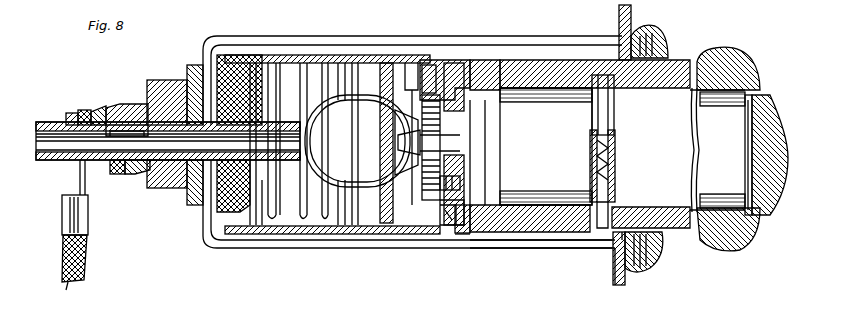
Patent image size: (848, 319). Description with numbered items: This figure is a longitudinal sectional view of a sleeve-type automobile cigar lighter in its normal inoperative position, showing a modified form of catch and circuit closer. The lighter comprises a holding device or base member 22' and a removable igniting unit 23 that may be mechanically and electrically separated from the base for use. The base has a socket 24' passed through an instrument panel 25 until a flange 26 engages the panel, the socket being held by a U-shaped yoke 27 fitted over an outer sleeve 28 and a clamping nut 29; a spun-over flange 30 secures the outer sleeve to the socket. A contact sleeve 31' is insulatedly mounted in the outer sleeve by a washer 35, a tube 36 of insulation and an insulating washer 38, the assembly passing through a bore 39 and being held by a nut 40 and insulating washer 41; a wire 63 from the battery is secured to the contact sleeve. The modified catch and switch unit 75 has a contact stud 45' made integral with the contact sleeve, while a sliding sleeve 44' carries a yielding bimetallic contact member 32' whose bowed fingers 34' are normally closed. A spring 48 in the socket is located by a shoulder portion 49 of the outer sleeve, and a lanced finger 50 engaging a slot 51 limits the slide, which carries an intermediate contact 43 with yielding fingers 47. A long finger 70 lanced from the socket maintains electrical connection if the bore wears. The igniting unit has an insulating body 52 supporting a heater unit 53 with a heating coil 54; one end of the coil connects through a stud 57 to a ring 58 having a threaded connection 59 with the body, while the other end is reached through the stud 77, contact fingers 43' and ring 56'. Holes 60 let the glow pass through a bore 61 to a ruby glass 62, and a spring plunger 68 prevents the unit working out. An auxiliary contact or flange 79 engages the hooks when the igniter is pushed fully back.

The base member 22' is at (670, 37).
The removable igniting unit 23 is at (761, 57).
The socket 24' is at (452, 238).
The instrument panel 25 is at (620, 22).
The flange 26 is at (648, 258).
The U-shaped yoke 27 is at (508, 246).
The outer sleeve 28 is at (133, 105).
The clamping nut 29 is at (163, 80).
The spun-over flange 30 is at (197, 70).
The contact sleeve 31' is at (111, 104).
The yielding bimetallic contact member 32' is at (351, 118).
The bowed fingers 34' is at (323, 141).
The washer 35 is at (265, 225).
The tube of insulation 36 is at (126, 167).
The insulating washer 38 is at (222, 212).
The bore 39 is at (139, 168).
The nut 40 is at (90, 113).
The insulating washer 41 is at (108, 114).
The intermediate contact 43 is at (419, 183).
The contact fingers 43' is at (408, 51).
The sliding sleeve 44' is at (388, 190).
The contact stud 45' is at (276, 115).
The yielding fingers 47 is at (423, 225).
The spring 48 is at (274, 225).
The shoulder portion 49 is at (250, 225).
The lanced finger 50 is at (340, 228).
The slot 51 is at (386, 222).
The body 52 is at (538, 62).
The heater unit 53 is at (455, 232).
The heating coil 54 is at (464, 85).
The ring 56' is at (432, 52).
The stud 57 is at (429, 142).
The ring 58 is at (456, 222).
The threaded connection 59 is at (490, 80).
The holes 60 is at (462, 186).
The bore 61 is at (535, 192).
The ruby glass 62 is at (775, 121).
The wire 63 is at (70, 284).
The spring plunger 68 is at (598, 226).
The long finger 70 is at (447, 65).
The catch and switch unit 75 is at (308, 95).
The stud 77 is at (357, 141).
The auxiliary contact or flange 79 is at (263, 60).